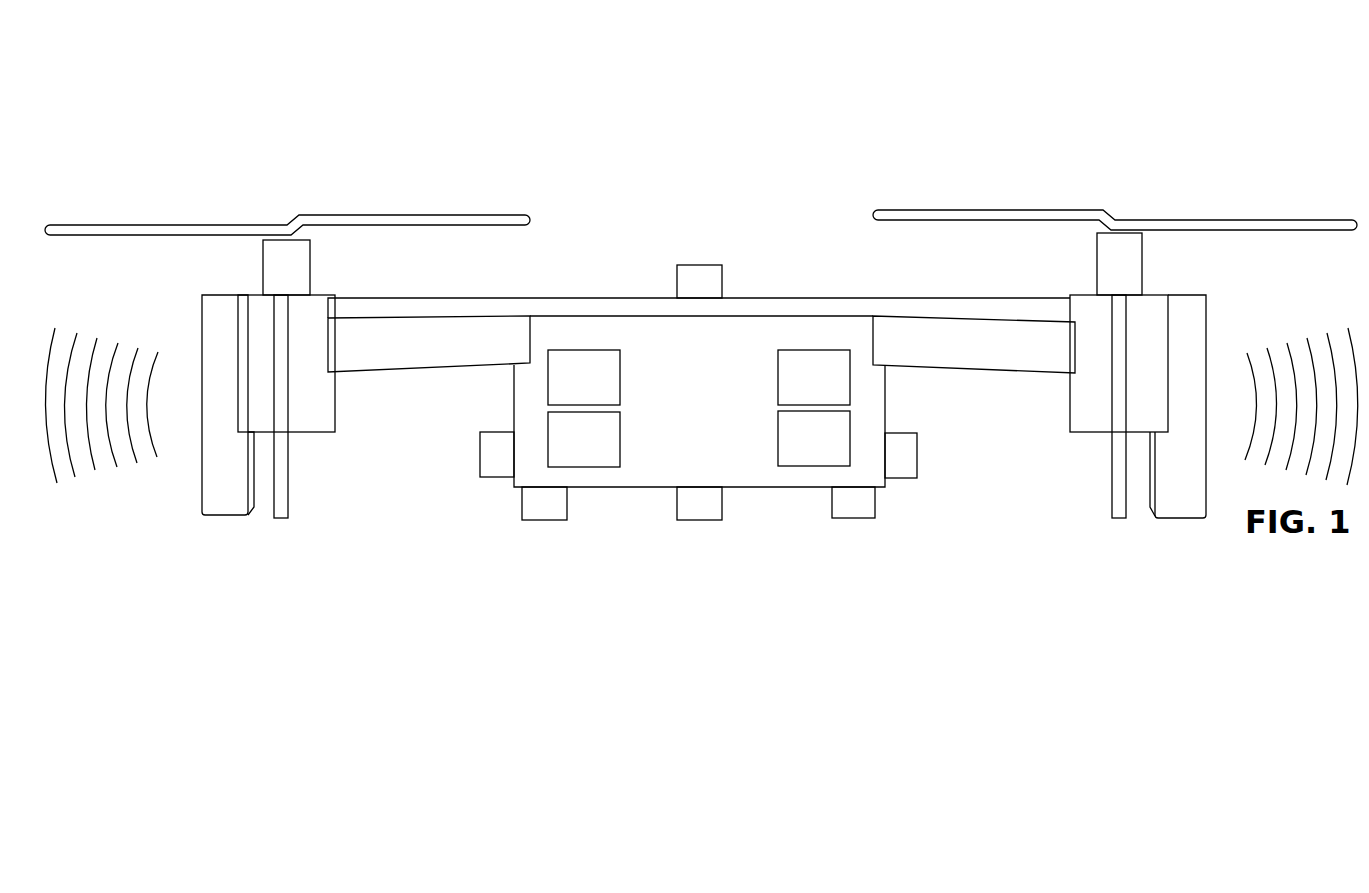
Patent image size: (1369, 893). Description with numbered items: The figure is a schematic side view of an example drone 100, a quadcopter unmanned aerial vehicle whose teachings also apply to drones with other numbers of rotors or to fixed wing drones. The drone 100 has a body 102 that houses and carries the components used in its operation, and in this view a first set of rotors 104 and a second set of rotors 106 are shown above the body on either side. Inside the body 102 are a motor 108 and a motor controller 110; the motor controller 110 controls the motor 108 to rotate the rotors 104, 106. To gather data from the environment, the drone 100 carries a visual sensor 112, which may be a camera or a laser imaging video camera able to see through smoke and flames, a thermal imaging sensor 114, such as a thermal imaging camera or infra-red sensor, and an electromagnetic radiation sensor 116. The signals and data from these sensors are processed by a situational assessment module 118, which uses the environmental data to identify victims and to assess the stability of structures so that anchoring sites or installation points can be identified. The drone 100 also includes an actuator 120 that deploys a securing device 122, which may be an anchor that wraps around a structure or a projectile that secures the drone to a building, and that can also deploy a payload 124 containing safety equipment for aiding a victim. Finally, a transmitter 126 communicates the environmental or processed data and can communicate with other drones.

The drone 100 is at (158, 120).
The body 102 is at (513, 414).
The first set of rotors 104 is at (466, 216).
The second set of rotors 106 is at (1014, 210).
The motor 108 is at (778, 366).
The motor controller 110 is at (778, 440).
The visual sensor 112 is at (522, 495).
The thermal imaging sensor 114 is at (677, 495).
The electromagnetic radiation sensor 116 is at (832, 495).
The situational assessment module 118 is at (620, 356).
The actuator 120 is at (620, 432).
The securing device 122 is at (480, 443).
The payload 124 is at (917, 442).
The transmitter 126 is at (722, 272).